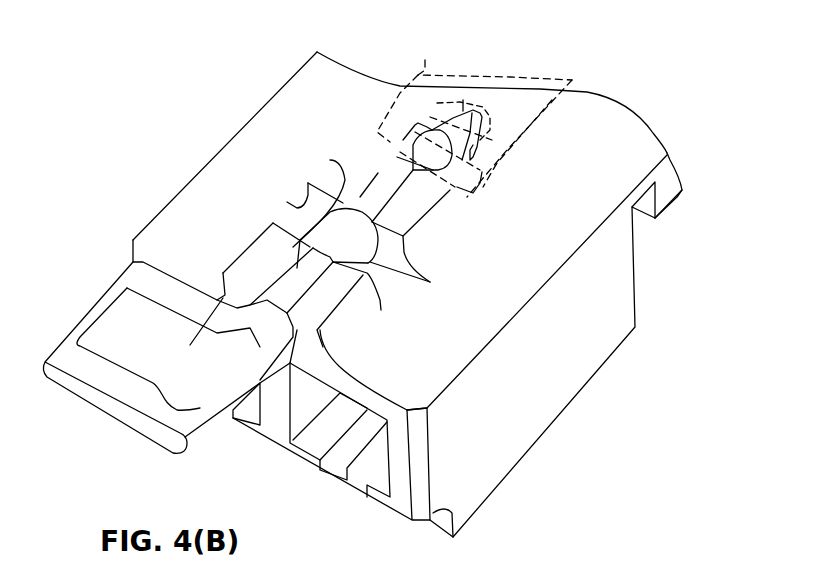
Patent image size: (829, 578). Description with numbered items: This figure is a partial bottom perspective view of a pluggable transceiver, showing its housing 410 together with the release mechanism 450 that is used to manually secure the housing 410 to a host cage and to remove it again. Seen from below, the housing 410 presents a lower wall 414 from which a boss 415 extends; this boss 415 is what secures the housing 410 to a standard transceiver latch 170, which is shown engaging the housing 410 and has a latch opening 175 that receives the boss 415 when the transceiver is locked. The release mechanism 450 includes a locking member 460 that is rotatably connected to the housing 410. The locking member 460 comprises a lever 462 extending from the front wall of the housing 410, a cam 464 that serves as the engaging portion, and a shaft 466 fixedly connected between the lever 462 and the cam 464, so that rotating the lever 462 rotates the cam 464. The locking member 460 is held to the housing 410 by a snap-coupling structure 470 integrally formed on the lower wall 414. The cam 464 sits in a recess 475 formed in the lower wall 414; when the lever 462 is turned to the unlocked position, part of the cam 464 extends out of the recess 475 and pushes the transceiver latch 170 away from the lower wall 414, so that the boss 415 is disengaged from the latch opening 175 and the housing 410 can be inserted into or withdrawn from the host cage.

The housing 410 is at (168, 232).
The lower wall 414 is at (587, 193).
The boss 415 is at (487, 122).
The release mechanism 450 is at (115, 43).
The locking member 460 is at (176, 22).
The lever 462 is at (380, 195).
The cam 464 is at (418, 148).
The shaft 466 is at (388, 162).
The snap-coupling structure 470 is at (330, 173).
The recess 475 is at (413, 127).
The transceiver latch 170 is at (425, 60).
The latch opening 175 is at (473, 108).